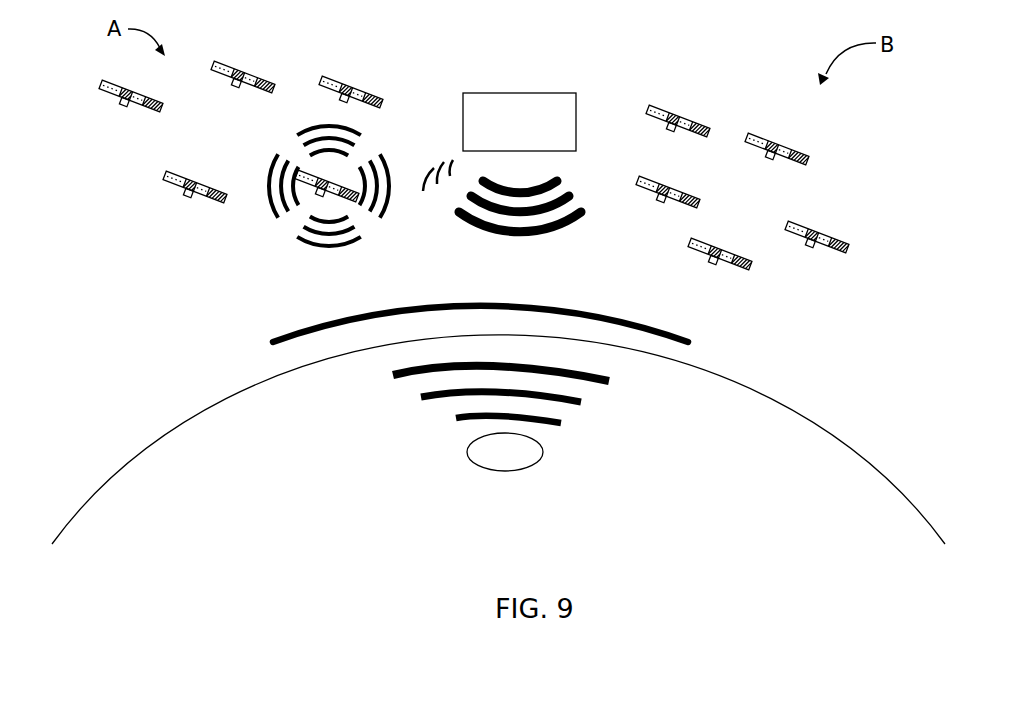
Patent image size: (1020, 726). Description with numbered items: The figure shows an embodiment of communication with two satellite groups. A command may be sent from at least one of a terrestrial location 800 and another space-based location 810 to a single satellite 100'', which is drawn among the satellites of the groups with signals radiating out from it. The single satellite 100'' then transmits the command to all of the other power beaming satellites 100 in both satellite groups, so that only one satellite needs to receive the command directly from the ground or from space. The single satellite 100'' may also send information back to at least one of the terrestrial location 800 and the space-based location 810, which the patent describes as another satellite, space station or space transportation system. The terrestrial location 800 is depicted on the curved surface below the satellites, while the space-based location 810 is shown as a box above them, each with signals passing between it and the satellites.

The power beaming satellite 100 is at (473, 154).
The single satellite 100'' is at (363, 186).
The space-based location 810 is at (520, 92).
The terrestrial location 800 is at (518, 468).